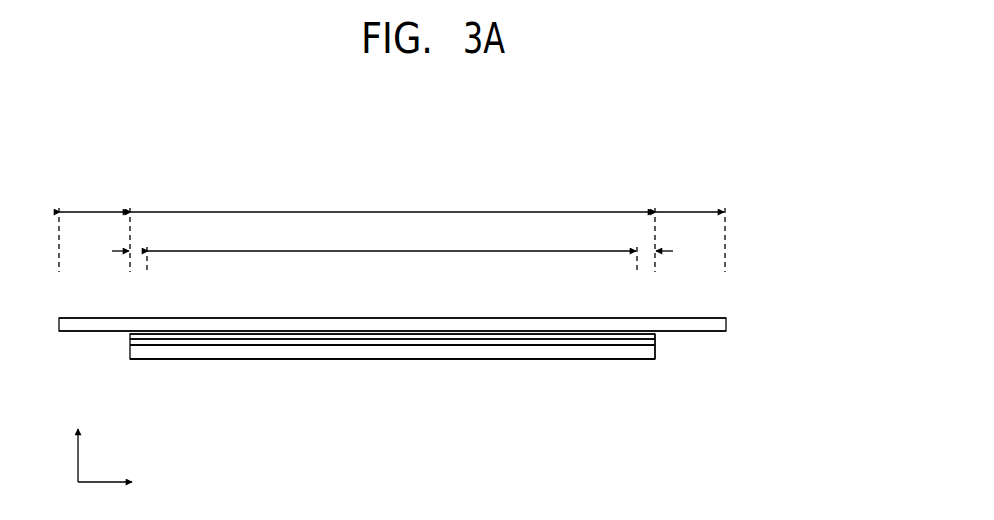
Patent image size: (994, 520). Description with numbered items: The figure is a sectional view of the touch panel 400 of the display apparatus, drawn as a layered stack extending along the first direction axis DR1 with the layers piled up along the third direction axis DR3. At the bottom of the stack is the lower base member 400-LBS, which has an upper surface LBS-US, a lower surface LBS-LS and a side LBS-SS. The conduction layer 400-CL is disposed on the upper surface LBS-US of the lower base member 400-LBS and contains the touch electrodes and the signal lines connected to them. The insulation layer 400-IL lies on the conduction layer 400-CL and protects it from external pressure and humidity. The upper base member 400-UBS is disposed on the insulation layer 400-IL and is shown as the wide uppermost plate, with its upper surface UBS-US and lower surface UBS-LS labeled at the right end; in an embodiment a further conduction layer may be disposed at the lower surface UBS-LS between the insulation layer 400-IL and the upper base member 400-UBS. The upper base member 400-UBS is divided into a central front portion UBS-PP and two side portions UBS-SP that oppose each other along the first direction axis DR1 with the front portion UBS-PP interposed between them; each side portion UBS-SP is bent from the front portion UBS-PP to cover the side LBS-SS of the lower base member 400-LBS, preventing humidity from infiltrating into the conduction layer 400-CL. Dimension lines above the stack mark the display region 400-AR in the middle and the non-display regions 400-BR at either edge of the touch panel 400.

The touch panel 400 is at (483, 410).
The upper base member 400-UBS is at (445, 326).
The insulation layer 400-IL is at (358, 337).
The conduction layer 400-CL is at (278, 343).
The lower base member 400-LBS is at (193, 353).
The display region 400-AR is at (392, 240).
The non-display region 400-BR is at (392, 240).
The side portion UBS-SP is at (392, 200).
The front portion UBS-PP is at (392, 200).
The upper surface of upper base member UBS-US is at (712, 318).
The lower surface of upper base member UBS-LS is at (712, 331).
The upper surface of lower base member LBS-US is at (525, 349).
The lower surface of lower base member LBS-LS is at (605, 362).
The side of lower base member LBS-SS is at (655, 350).
The first direction axis DR1 is at (122, 484).
The third direction axis DR3 is at (79, 444).